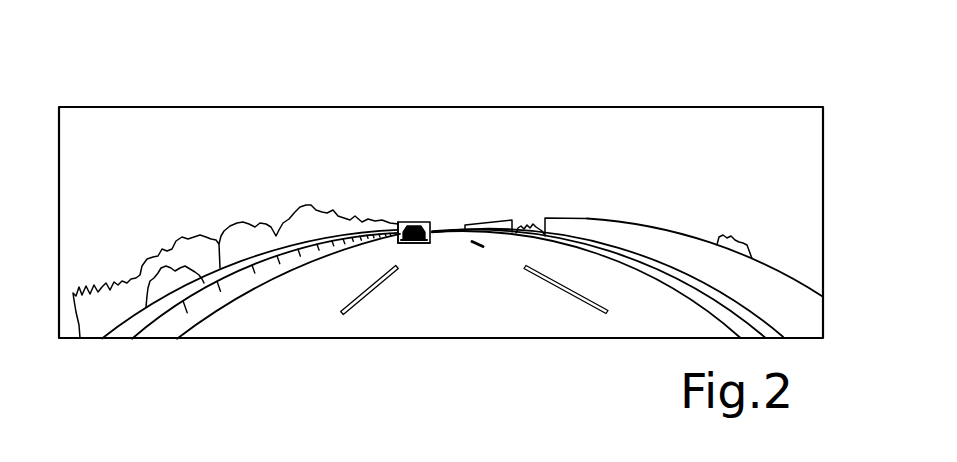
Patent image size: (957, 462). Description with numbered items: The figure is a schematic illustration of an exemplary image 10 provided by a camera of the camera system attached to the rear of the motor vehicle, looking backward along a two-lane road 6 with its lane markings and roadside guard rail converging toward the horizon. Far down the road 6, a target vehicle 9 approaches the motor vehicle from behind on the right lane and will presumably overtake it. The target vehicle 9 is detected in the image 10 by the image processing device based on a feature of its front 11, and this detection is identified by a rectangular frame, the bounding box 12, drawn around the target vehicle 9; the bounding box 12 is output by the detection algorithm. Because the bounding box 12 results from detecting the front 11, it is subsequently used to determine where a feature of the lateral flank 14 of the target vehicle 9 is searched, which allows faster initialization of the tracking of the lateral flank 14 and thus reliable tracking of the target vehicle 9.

The two-lane road 6 is at (532, 317).
The target vehicle 9 is at (413, 222).
The image 10 is at (824, 207).
The front 11 is at (422, 245).
The bounding box 12 is at (415, 243).
The lateral flank 14 is at (432, 228).